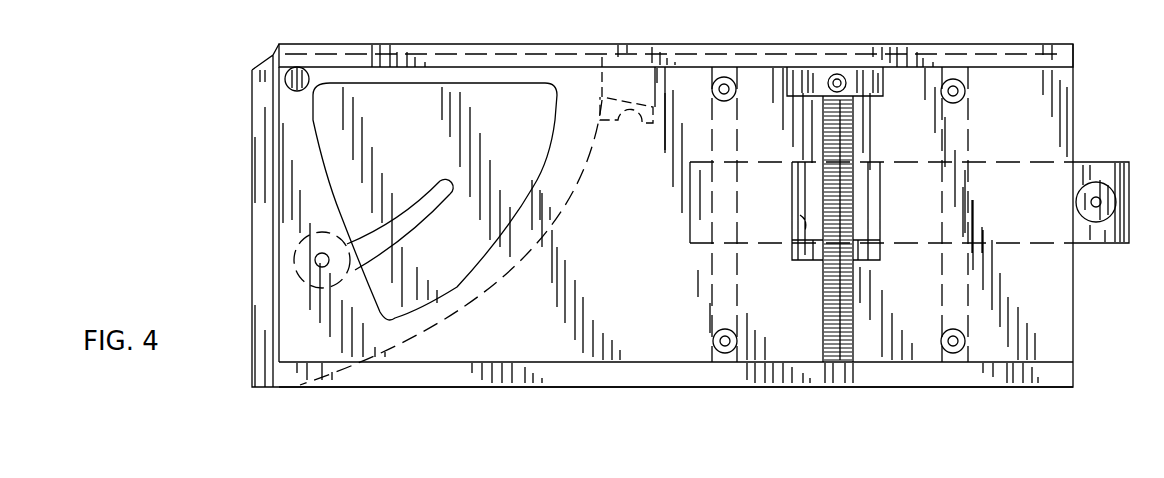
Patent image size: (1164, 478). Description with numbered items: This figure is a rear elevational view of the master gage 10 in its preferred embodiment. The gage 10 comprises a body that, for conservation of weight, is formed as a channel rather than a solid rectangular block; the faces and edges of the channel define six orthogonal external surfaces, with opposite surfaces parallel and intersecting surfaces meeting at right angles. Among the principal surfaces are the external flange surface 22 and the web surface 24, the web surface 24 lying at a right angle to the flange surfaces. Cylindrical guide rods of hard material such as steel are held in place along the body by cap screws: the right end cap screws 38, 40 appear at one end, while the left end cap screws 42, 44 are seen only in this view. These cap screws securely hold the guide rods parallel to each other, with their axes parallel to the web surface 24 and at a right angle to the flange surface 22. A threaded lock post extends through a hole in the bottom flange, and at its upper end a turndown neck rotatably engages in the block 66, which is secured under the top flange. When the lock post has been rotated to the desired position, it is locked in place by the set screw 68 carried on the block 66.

The master gage 10 is at (1085, 331).
The external flange surface 22 is at (764, 45).
The web surface 24 is at (558, 388).
The right end cap screw 38 is at (727, 78).
The right end cap screw 40 is at (725, 353).
The left end cap screw 42 is at (965, 88).
The left end cap screw 44 is at (953, 353).
The block 66 is at (885, 78).
The set screw 68 is at (837, 77).